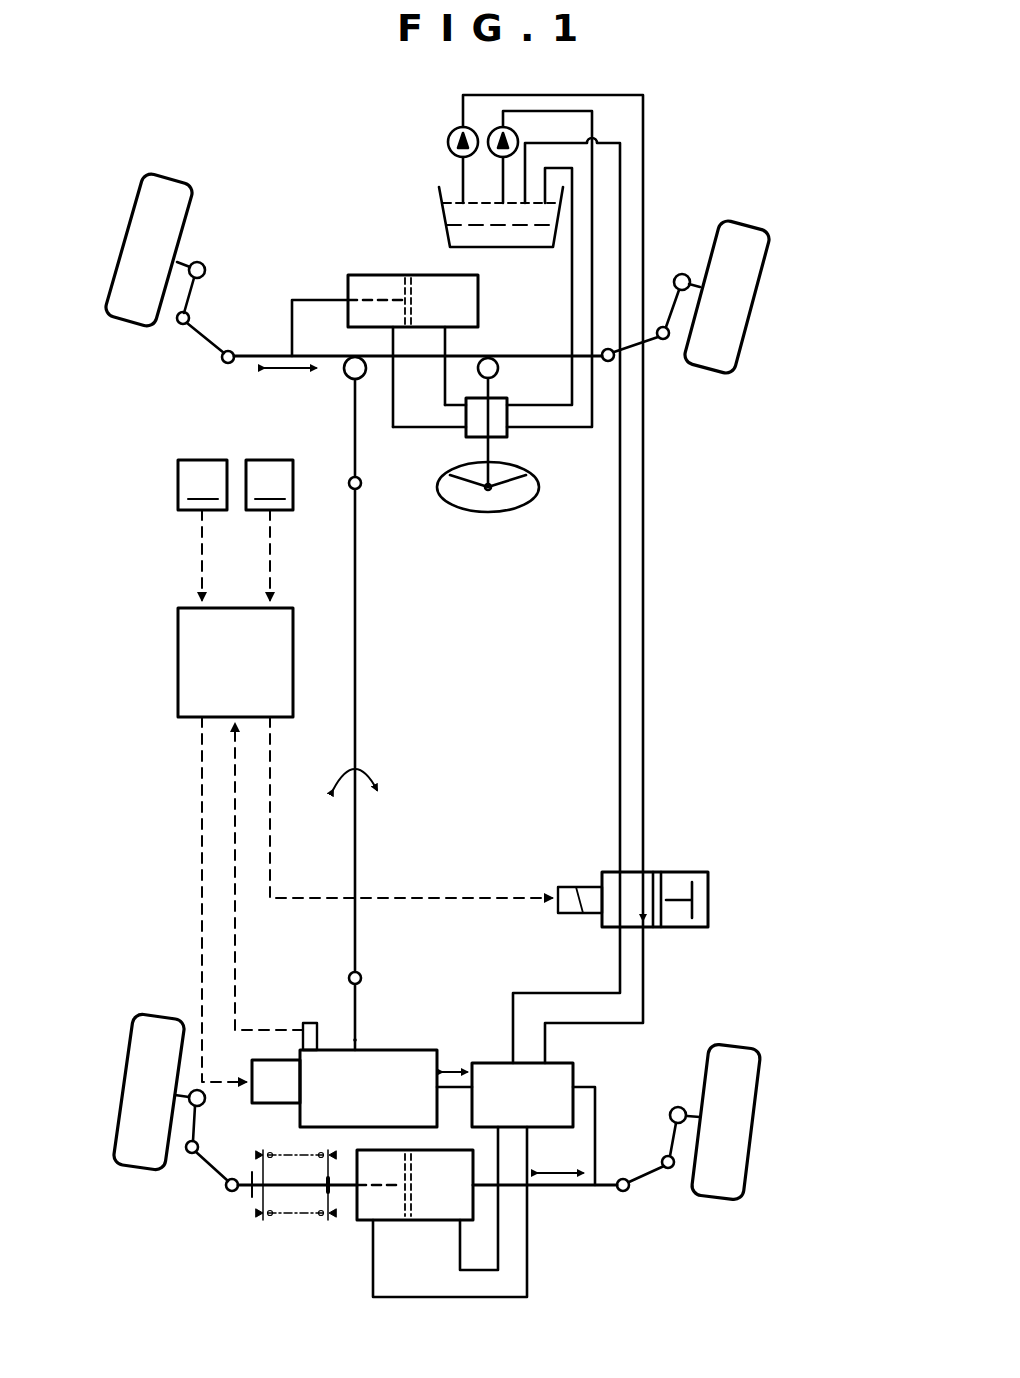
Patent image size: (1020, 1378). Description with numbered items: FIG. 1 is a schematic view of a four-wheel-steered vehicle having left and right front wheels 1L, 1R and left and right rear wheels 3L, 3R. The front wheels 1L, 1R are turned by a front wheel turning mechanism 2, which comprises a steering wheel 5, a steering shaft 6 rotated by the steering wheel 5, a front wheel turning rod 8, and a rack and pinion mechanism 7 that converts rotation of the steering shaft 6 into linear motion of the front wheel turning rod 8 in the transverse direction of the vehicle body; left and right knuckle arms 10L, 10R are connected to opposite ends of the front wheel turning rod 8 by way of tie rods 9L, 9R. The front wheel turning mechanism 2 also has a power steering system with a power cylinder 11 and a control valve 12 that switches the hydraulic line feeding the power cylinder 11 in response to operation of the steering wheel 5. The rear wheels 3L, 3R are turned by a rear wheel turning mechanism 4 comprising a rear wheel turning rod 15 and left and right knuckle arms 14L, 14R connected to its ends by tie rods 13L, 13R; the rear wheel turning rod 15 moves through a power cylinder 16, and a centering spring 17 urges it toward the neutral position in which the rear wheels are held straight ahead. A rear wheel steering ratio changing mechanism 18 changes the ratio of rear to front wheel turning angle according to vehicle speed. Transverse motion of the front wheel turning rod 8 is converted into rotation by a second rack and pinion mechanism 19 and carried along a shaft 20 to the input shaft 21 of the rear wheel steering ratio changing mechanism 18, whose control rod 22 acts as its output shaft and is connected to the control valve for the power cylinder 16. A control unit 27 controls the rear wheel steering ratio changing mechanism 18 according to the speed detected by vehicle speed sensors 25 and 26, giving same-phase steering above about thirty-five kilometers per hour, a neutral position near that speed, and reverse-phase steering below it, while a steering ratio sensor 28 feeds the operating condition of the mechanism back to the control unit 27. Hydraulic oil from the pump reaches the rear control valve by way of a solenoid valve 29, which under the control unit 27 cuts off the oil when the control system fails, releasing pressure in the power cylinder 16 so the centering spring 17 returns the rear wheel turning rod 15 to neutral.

The left front wheel 1L is at (143, 224).
The right front wheel 1R is at (764, 250).
The front wheel turning mechanism 2 is at (385, 316).
The left rear wheel 3L is at (118, 1170).
The right rear wheel 3R is at (748, 1185).
The rear wheel turning mechanism 4 is at (427, 1218).
The steering wheel 5 is at (536, 497).
The steering shaft 6 is at (492, 445).
The rack and pinion mechanism 7 is at (500, 346).
The front wheel turning rod 8 is at (264, 356).
The left tie rod 9L is at (208, 343).
The right tie rod 9R is at (648, 348).
The left knuckle arm 10L is at (194, 297).
The right knuckle arm 10R is at (665, 282).
The power cylinder 11 is at (446, 275).
The control valve 12 is at (510, 400).
The left tie rod 13L is at (214, 1176).
The right tie rod 13R is at (650, 1178).
The left knuckle arm 14L is at (197, 1138).
The right knuckle arm 14R is at (668, 1136).
The rear wheel turning rod 15 is at (565, 1188).
The power cylinder 16 is at (446, 1222).
The centering spring 17 is at (322, 1222).
The rear wheel steering ratio changing mechanism 18 is at (411, 1050).
The second rack and pinion mechanism 19 is at (343, 376).
The transmission shaft 20 is at (358, 680).
The input shaft 21 is at (357, 1032).
The control rod 22 is at (462, 1068).
The vehicle speed sensor 25 is at (202, 485).
The vehicle speed sensor 26 is at (269, 485).
The control unit 27 is at (176, 681).
The steering ratio sensor 28 is at (306, 1022).
The solenoid valve 29 is at (690, 872).